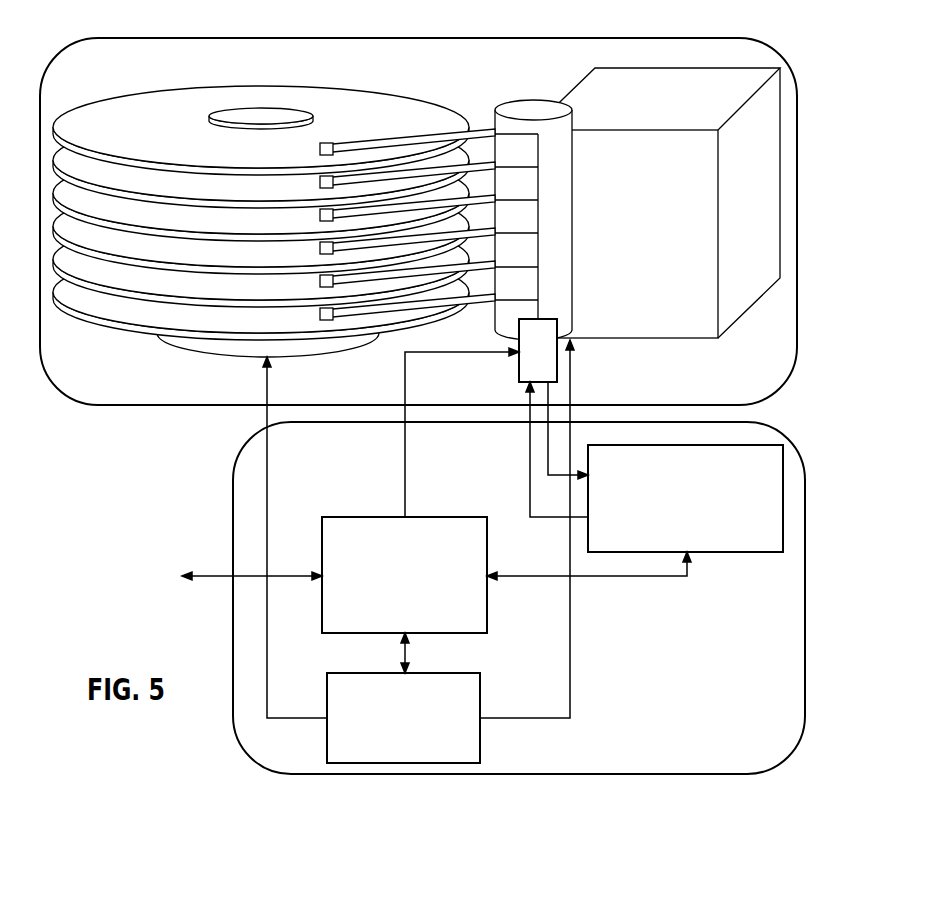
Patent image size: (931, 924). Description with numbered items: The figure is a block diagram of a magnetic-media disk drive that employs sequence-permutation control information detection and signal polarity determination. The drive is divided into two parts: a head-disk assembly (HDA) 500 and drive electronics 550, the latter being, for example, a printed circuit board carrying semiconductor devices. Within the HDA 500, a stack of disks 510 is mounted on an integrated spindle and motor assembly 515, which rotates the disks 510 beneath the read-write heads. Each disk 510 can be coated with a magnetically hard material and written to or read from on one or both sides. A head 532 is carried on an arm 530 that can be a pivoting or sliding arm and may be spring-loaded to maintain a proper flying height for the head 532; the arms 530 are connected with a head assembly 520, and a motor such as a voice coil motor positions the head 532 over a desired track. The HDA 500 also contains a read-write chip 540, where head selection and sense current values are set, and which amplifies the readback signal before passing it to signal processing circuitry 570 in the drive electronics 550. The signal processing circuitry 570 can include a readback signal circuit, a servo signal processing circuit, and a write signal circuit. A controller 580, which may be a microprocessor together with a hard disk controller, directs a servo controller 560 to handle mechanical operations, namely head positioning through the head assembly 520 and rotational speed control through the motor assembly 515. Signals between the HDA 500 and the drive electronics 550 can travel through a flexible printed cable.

The head-disk assembly 500 is at (748, 386).
The disk 510 is at (158, 81).
The spindle and motor assembly 515 is at (212, 358).
The head assembly 520 is at (553, 88).
The arm 530 is at (418, 132).
The head 532 is at (327, 143).
The read-write chip 540 is at (519, 370).
The drive electronics 550 is at (762, 751).
The servo controller 560 is at (455, 673).
The signal processing circuitry 570 is at (702, 553).
The controller 580 is at (420, 517).